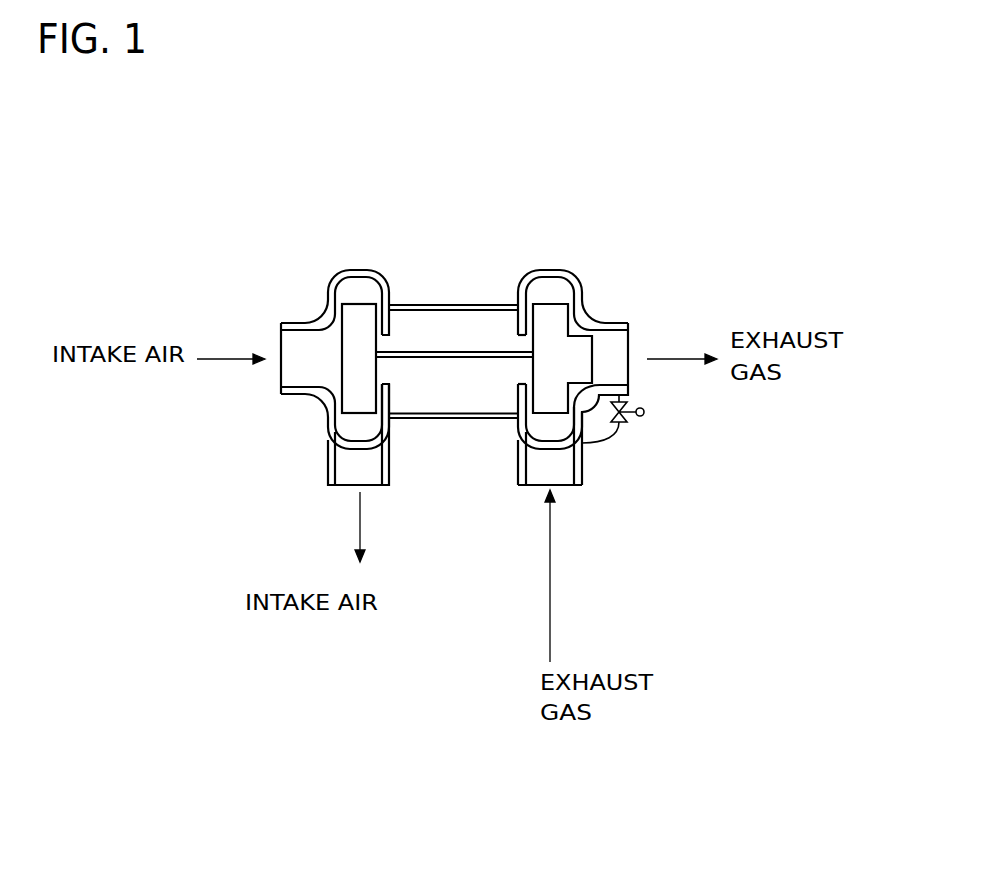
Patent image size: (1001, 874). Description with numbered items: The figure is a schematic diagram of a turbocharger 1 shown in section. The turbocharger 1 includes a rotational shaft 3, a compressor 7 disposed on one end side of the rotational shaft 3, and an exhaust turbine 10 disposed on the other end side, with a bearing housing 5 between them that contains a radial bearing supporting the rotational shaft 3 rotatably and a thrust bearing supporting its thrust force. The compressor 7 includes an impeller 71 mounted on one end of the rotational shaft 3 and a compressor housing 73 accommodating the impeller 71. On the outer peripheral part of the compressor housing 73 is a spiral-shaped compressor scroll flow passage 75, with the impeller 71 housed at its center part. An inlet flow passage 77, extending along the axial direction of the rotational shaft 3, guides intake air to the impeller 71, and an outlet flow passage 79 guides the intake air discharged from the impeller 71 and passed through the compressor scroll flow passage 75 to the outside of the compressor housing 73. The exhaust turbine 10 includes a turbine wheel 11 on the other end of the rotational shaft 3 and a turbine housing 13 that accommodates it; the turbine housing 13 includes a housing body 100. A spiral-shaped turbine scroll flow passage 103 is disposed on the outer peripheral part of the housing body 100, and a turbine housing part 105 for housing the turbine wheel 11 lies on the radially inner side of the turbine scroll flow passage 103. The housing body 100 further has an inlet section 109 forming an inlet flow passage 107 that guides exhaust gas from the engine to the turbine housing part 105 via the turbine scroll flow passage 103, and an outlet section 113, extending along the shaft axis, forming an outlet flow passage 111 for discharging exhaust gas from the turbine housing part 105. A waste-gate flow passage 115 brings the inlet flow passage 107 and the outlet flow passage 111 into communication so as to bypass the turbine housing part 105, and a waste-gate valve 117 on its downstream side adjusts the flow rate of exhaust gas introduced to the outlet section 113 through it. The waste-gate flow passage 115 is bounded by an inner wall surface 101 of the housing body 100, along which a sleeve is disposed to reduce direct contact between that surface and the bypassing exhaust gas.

The turbocharger 1 is at (392, 166).
The rotational shaft 3 is at (458, 360).
The bearing housing 5 is at (455, 304).
The compressor 7 is at (286, 273).
The exhaust turbine 10 is at (692, 229).
The turbine wheel 11 is at (553, 342).
The turbine housing 13 is at (550, 273).
The housing body 100 is at (573, 302).
The impeller 71 is at (357, 385).
The compressor housing 73 is at (285, 323).
The compressor scroll flow passage 75 is at (361, 270).
The inlet flow passage 77 is at (300, 365).
The outlet flow passage 79 is at (350, 455).
The inner wall surface 101 is at (530, 428).
The turbine scroll flow passage 103 is at (552, 293).
The turbine housing part 105 is at (533, 390).
The inlet flow passage 107 is at (550, 463).
The inlet section 109 is at (577, 462).
The outlet flow passage 111 is at (610, 363).
The outlet section 113 is at (623, 321).
The waste-gate flow passage 115 is at (613, 435).
The waste-gate valve 117 is at (644, 413).